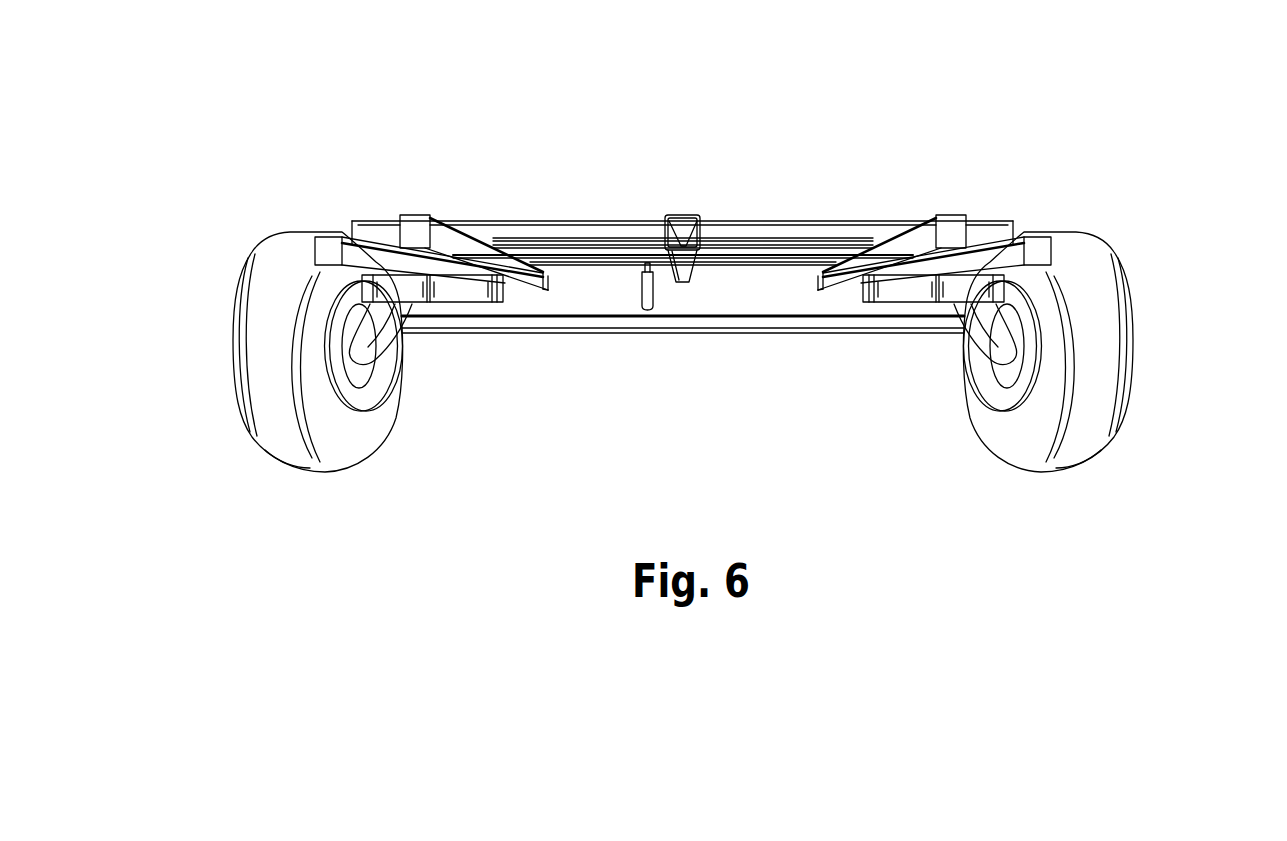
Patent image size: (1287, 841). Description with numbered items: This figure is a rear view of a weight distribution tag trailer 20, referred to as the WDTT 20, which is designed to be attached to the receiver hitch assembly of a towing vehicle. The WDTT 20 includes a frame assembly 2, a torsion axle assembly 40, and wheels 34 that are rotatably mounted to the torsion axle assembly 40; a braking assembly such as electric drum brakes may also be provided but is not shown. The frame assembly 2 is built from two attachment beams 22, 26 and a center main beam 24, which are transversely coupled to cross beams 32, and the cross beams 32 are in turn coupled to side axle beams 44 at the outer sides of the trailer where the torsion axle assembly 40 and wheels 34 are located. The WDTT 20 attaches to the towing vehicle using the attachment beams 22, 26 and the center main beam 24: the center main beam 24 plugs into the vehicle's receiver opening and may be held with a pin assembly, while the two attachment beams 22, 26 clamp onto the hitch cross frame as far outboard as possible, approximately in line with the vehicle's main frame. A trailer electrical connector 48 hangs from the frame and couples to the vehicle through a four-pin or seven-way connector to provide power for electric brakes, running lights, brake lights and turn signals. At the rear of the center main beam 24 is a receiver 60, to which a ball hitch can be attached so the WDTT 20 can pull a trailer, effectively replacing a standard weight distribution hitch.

The frame assembly 2 is at (581, 372).
The weight distribution tag trailer 20 is at (525, 195).
The attachment beam 22 is at (420, 232).
The center main beam 24 is at (690, 271).
The attachment beam 26 is at (952, 225).
The cross beams 32 is at (772, 257).
The wheels 34 is at (258, 408).
The torsion axle assembly 40 is at (983, 344).
The side axle beams 44 is at (328, 249).
The trailer electrical connector 48 is at (644, 288).
The receiver 60 is at (692, 232).